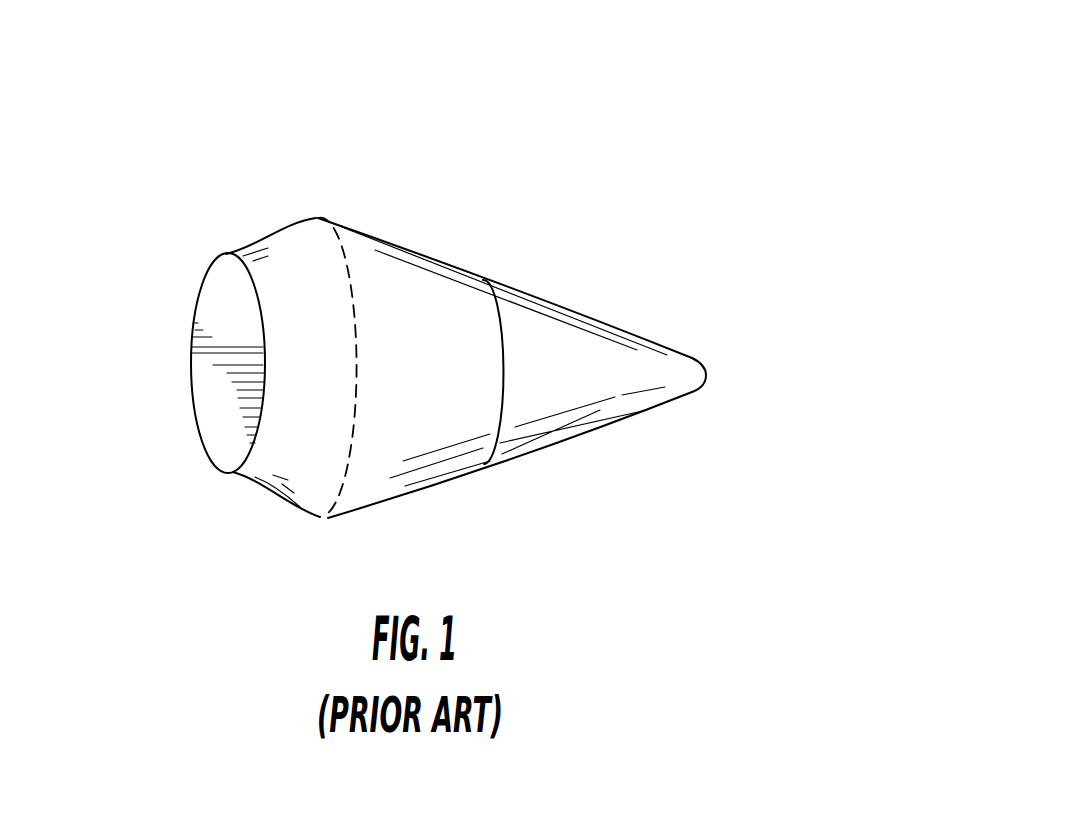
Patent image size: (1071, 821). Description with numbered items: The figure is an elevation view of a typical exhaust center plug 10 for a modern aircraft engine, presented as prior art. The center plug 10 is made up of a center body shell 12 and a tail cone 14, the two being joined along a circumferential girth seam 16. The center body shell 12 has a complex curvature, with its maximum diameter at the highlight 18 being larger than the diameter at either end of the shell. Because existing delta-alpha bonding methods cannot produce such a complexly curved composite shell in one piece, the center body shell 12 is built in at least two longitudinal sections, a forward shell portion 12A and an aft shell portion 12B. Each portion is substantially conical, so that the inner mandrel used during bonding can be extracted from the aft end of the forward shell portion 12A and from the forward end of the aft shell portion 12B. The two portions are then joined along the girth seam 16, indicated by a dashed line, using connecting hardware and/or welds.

The engine exhaust center plug 10 is at (395, 278).
The center body shell 12 is at (186, 386).
The forward shell portion 12A is at (277, 304).
The aft shell portion 12B is at (423, 440).
The tail cone 14 is at (615, 417).
The girth seam 16 is at (340, 262).
The highlight 18 is at (318, 208).